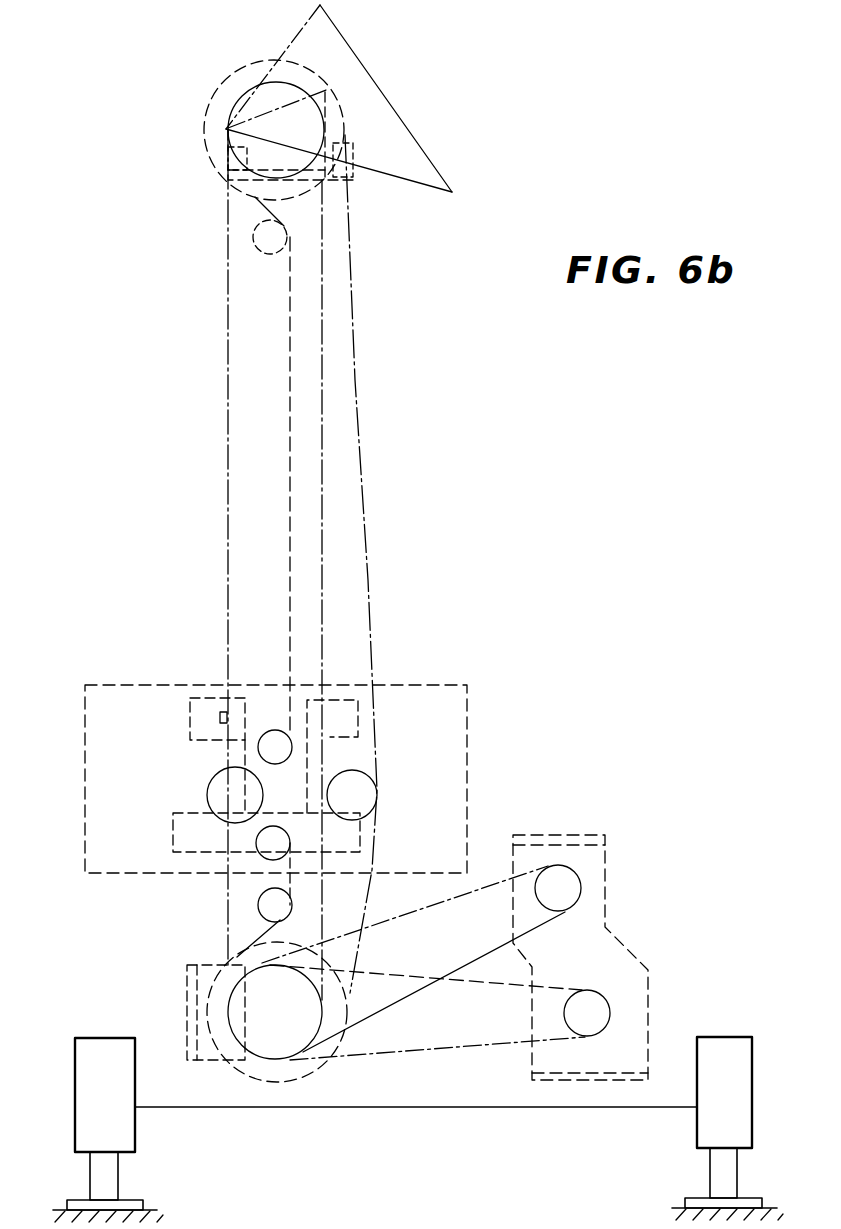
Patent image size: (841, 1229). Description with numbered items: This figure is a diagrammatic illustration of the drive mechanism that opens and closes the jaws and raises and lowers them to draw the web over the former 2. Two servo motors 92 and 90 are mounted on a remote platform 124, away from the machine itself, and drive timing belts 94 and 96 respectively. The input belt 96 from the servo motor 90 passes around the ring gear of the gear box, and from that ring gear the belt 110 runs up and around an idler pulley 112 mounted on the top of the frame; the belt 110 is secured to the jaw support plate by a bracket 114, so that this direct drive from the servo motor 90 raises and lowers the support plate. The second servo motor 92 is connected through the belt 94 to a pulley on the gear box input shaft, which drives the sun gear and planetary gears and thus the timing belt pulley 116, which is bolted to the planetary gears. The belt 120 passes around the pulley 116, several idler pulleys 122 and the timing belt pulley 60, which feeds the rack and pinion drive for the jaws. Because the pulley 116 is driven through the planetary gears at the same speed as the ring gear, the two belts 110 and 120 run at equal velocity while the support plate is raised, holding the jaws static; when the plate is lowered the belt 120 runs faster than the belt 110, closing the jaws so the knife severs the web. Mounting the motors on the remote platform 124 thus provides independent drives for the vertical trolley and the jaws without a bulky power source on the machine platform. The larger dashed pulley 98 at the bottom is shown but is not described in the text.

The former 2 is at (400, 117).
The timing belt pulley 60 is at (207, 797).
The servo motor 90 is at (582, 872).
The servo motor 92 is at (620, 982).
The timing belt 94 is at (489, 1043).
The timing belt 96 is at (466, 963).
The large pulley 98 is at (298, 1082).
The belt 110 is at (228, 625).
The idler pulley 112 is at (228, 132).
The bracket 114 is at (220, 715).
The timing belt pulley 116 is at (233, 1067).
The belt 120 is at (370, 607).
The idler pulleys 122 is at (205, 113).
The remote platform 124 is at (642, 1030).